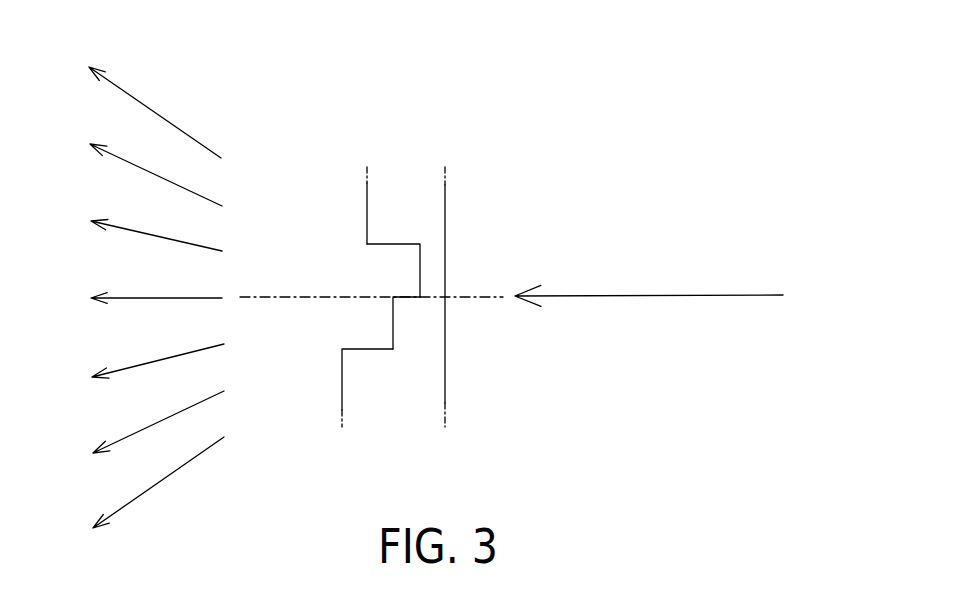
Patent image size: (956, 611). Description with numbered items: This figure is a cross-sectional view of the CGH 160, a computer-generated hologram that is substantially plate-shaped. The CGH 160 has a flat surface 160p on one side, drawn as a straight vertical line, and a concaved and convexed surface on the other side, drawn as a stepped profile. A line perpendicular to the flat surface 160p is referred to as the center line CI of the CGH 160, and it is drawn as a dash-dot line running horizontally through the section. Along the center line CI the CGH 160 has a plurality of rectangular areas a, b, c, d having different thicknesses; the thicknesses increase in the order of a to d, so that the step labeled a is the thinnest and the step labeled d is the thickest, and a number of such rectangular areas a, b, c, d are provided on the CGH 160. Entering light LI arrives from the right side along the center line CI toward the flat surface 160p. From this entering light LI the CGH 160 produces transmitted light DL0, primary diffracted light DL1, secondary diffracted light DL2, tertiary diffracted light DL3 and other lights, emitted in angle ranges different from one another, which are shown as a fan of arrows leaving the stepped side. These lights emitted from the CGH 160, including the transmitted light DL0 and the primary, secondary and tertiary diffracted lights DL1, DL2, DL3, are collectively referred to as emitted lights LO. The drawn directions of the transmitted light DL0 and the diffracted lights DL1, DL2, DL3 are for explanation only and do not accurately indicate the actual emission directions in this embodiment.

The CGH 160 is at (441, 260).
The flat surface 160p is at (446, 384).
The center line CI is at (475, 296).
The entering light LI is at (649, 287).
The emitted lights LO is at (247, 88).
The transmitted light DL0 is at (139, 297).
The primary diffracted light DL1 is at (139, 233).
The secondary diffracted light DL2 is at (130, 158).
The tertiary diffracted light DL3 is at (138, 100).
The rectangular area a is at (420, 272).
The rectangular area b is at (394, 325).
The rectangular area c is at (367, 219).
The rectangular area d is at (342, 383).